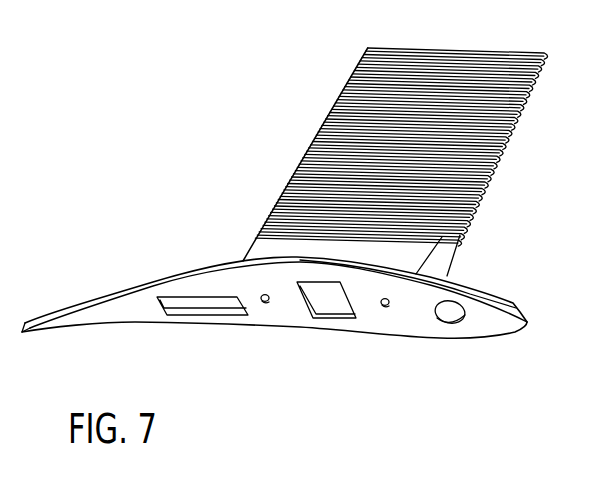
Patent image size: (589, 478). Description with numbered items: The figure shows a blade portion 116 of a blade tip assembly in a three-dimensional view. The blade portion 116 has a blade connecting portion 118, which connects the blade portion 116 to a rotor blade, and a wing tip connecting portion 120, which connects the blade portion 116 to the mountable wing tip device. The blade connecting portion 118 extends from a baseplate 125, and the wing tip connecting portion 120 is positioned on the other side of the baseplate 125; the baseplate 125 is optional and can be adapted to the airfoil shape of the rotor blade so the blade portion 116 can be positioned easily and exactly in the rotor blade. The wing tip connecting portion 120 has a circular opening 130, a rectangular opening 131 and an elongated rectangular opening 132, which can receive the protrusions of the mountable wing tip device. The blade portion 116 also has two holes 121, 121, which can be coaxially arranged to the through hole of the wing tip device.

The blade portion 116 is at (258, 143).
The blade connecting portion 118 is at (267, 246).
The wing tip connecting portion 120 is at (142, 308).
The hole 121 is at (260, 306).
The baseplate 125 is at (488, 290).
The circular opening 130 is at (448, 318).
The rectangular opening 131 is at (332, 306).
The elongated rectangular opening 132 is at (197, 305).